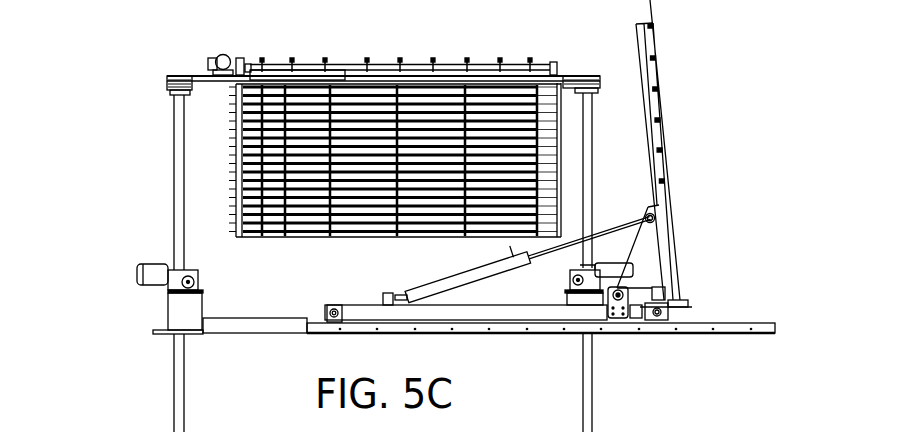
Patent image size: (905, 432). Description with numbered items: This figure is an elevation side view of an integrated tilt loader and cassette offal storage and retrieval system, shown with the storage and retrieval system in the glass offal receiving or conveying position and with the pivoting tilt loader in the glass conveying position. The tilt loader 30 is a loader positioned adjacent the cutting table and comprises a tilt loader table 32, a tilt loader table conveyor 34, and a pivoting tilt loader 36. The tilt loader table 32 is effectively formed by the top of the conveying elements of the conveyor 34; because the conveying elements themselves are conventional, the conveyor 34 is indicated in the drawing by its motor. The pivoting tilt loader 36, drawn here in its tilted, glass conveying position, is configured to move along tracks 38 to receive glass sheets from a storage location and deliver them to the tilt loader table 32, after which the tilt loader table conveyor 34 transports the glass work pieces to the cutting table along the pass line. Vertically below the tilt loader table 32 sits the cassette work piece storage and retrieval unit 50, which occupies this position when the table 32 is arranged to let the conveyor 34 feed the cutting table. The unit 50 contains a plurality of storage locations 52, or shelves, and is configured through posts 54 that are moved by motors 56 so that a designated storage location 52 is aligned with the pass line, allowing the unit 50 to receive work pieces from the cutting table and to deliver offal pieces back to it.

The tilt loader 30 is at (112, 133).
The tilt loader table 32 is at (437, 62).
The tilt loader table conveyor 34 is at (229, 50).
The pivoting tilt loader 36 is at (647, 73).
The tracks 38 is at (768, 322).
The cassette work piece storage and retrieval unit 50 is at (327, 265).
The storage locations 52 is at (232, 118).
The posts 54 is at (175, 203).
The motors 56 is at (168, 293).